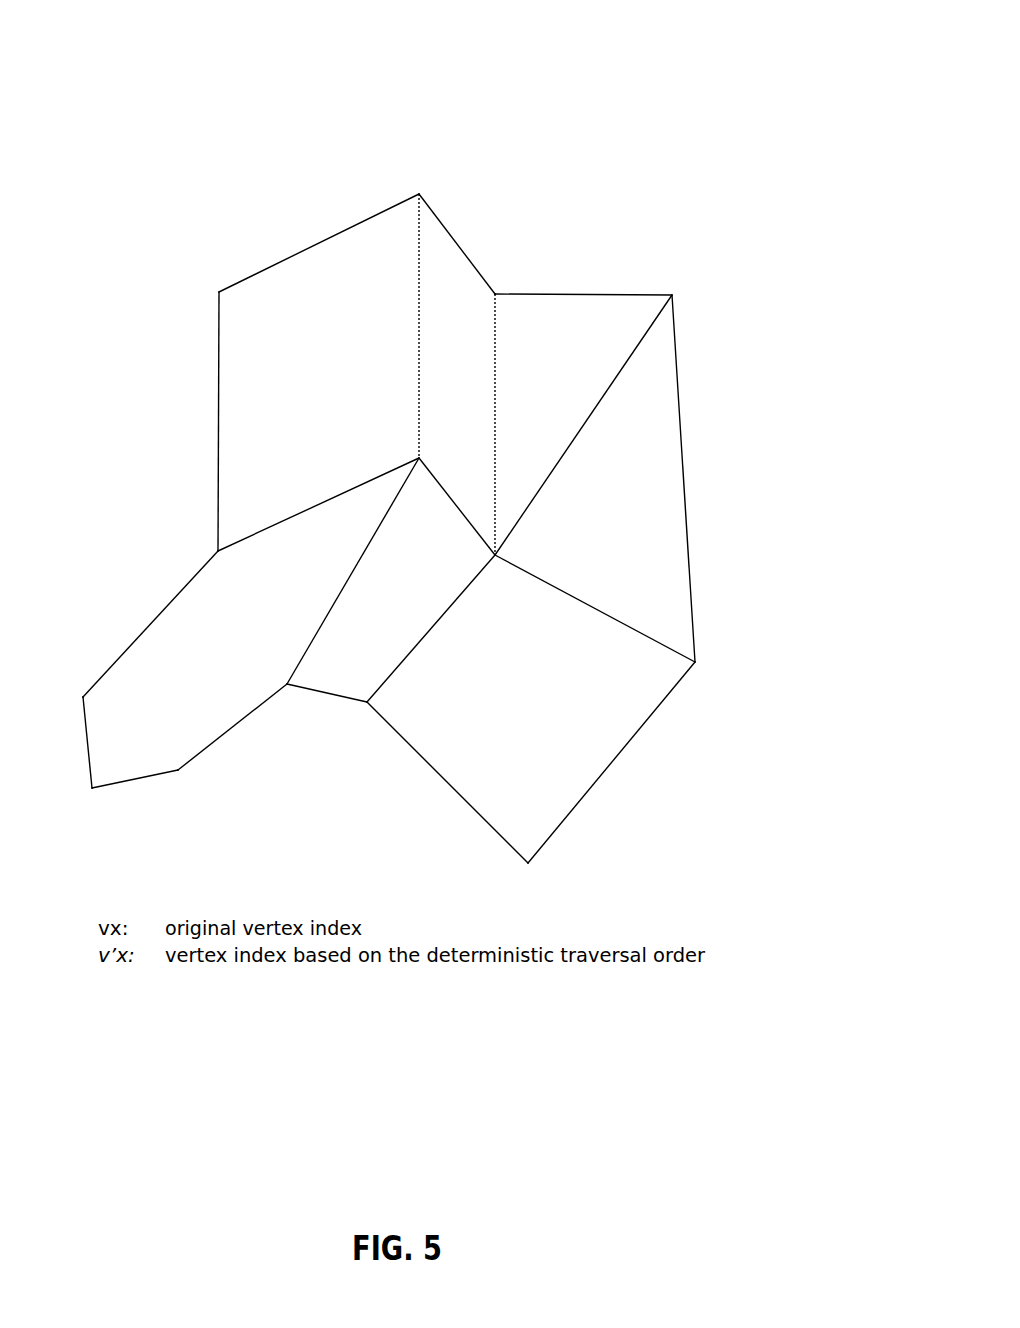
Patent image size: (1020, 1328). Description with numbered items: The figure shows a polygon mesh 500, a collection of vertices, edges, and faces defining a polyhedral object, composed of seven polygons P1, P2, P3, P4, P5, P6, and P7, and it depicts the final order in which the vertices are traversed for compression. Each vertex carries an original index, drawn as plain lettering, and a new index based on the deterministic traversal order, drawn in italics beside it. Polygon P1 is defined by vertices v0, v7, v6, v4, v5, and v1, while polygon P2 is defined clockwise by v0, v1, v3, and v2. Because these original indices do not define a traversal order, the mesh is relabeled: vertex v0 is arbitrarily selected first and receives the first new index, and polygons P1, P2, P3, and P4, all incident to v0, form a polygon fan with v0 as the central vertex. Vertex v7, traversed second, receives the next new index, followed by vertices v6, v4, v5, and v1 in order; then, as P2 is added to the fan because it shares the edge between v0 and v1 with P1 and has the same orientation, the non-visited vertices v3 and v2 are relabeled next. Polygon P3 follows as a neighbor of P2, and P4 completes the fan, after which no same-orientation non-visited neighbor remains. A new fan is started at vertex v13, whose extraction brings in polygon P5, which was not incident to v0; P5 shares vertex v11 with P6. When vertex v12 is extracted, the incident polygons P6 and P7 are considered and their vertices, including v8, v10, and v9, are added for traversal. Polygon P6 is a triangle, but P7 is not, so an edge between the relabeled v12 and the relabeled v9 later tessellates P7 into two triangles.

The polygon mesh 500 is at (731, 35).
The polygon P1 is at (251, 623).
The polygon P2 is at (318, 372).
The polygon P3 is at (457, 374).
The polygon P4 is at (391, 628).
The polygon P5 is at (583, 424).
The polygon P6 is at (595, 478).
The polygon P7 is at (531, 762).
The vertex v0 is at (413, 454).
The vertex v1 is at (219, 555).
The vertex v2 is at (405, 205).
The vertex v3 is at (219, 296).
The vertex v4 is at (111, 809).
The vertex v5 is at (87, 702).
The vertex v6 is at (167, 774).
The vertex v7 is at (280, 687).
The vertex v8 is at (355, 701).
The vertex v9 is at (526, 861).
The vertex v10 is at (695, 651).
The vertex v11 is at (665, 302).
The vertex v12 is at (494, 517).
The vertex v13 is at (515, 297).